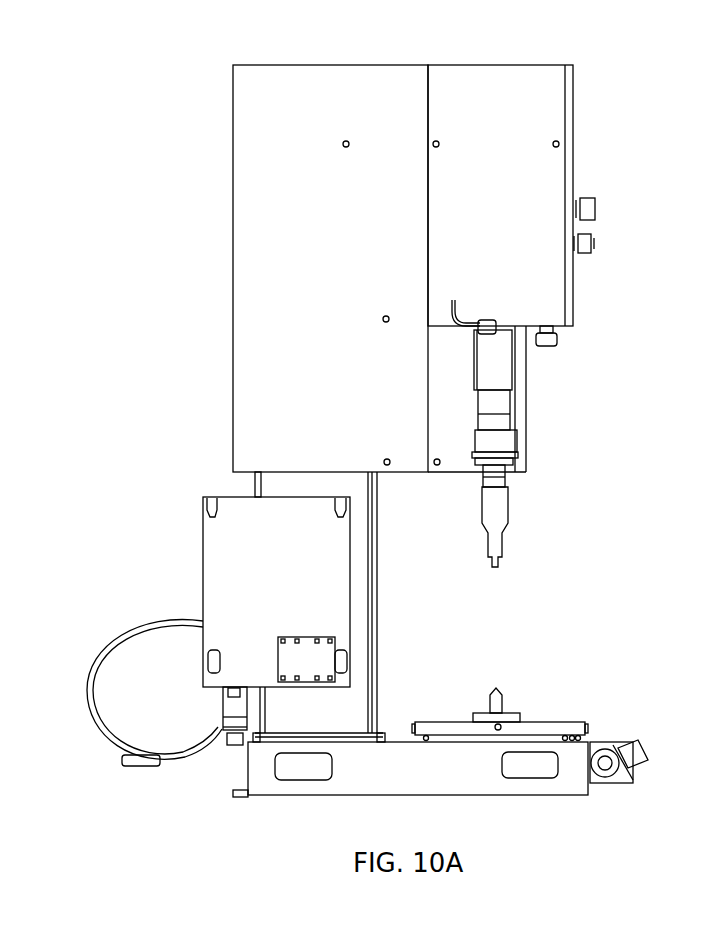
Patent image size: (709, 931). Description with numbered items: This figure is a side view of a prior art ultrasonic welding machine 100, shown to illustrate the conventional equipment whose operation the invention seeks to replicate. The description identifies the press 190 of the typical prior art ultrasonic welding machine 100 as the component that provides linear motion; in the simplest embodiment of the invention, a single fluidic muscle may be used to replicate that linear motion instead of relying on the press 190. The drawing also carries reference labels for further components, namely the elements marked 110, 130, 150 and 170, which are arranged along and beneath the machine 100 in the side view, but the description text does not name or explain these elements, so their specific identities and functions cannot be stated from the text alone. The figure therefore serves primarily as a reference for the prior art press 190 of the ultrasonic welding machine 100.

The ultrasonic welding machine 100 is at (594, 131).
The press 190 is at (543, 300).
The transducer unit 110 is at (490, 390).
The booster 130 is at (493, 442).
The horn 150 is at (496, 510).
The work stage 170 is at (503, 690).